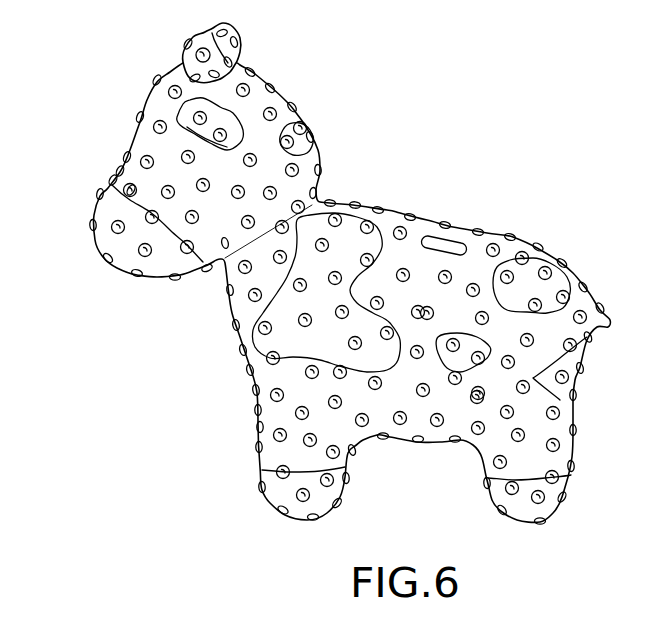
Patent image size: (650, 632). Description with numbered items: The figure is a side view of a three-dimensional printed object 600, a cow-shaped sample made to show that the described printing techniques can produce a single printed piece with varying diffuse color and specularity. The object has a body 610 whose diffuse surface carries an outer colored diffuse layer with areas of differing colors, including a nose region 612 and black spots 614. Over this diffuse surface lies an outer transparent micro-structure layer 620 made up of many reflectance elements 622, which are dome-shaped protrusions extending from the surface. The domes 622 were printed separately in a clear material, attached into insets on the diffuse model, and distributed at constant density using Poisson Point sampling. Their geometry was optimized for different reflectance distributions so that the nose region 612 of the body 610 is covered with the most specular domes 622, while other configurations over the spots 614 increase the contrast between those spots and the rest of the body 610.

The 3D printed object 600 is at (432, 114).
The body 610 is at (231, 306).
The nose region 612 is at (123, 264).
The black spots 614 is at (304, 361).
The micro-structure layer 620 is at (141, 134).
The reflectance elements 622 is at (130, 190).